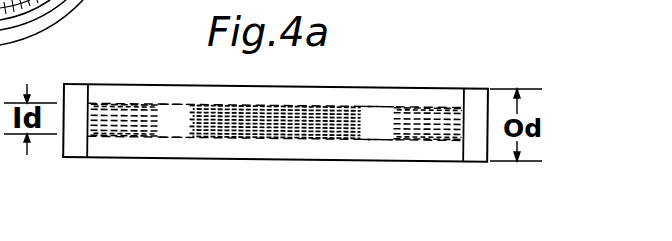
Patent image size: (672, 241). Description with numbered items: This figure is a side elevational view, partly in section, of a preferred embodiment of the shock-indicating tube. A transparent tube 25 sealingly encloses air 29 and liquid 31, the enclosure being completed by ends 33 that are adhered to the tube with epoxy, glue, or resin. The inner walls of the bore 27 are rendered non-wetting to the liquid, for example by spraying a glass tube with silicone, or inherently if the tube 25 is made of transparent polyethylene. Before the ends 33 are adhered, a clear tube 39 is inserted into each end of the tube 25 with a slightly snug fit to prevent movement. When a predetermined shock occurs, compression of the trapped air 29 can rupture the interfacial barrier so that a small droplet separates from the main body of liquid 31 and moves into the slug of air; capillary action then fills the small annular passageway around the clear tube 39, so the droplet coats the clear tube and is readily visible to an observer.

The transparent tube 25 is at (437, 160).
The bore 27 is at (381, 135).
The air 29 is at (187, 125).
The liquid 31 is at (279, 127).
The ends 33 is at (73, 148).
The clear tube 39 is at (129, 120).